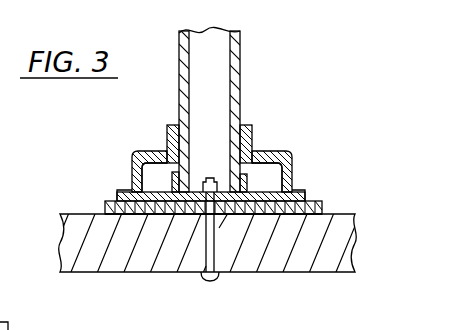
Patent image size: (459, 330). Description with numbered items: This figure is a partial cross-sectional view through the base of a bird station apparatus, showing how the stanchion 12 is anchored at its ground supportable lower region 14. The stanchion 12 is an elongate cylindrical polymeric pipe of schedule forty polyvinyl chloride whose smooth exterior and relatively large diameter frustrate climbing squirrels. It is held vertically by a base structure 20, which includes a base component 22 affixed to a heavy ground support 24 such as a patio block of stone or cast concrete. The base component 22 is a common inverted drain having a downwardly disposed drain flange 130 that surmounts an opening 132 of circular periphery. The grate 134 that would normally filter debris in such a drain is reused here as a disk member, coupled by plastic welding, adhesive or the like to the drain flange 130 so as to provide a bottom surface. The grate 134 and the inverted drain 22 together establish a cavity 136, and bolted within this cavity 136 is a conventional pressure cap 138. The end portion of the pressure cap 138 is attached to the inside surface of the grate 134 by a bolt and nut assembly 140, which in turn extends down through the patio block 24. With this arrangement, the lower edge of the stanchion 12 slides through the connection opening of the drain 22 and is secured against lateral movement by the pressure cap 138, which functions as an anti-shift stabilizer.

The stanchion 12 is at (243, 54).
The ground supportable lower region 14 is at (277, 112).
The base structure 20 is at (92, 166).
The base component 22 is at (293, 157).
The ground support 24 is at (330, 262).
The drain flange 130 is at (322, 207).
The opening 132 is at (115, 200).
The grate 134 is at (162, 215).
The cavity 136 is at (155, 170).
The pressure cap 138 is at (248, 189).
The bolt and nut assembly 140 is at (211, 281).